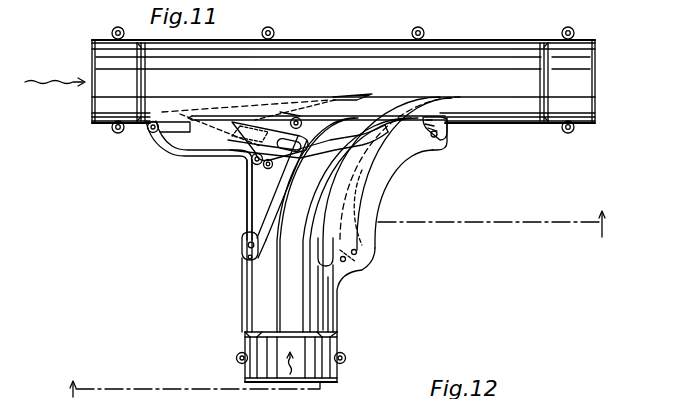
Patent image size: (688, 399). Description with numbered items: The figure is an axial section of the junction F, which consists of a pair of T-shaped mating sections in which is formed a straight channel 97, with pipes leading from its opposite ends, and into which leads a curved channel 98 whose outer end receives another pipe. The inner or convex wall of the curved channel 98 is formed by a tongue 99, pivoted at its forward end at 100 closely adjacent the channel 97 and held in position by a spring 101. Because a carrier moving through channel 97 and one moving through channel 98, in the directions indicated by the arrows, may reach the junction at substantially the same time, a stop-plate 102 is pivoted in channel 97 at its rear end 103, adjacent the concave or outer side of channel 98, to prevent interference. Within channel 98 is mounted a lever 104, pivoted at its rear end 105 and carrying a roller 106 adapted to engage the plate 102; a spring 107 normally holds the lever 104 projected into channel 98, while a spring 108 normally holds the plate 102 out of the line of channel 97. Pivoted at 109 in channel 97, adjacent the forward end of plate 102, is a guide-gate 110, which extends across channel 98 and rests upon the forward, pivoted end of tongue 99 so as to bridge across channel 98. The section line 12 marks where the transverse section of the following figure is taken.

The channel 97 is at (379, 54).
The curved channel 98 is at (264, 325).
The tongue 99 is at (360, 246).
The pivot of tongue 100 is at (445, 136).
The spring 101 is at (372, 178).
The stop-plate 102 is at (176, 154).
The pivot of stop-plate 103 is at (163, 128).
The lever 104 is at (265, 219).
The pivot of lever 105 is at (246, 251).
The roller 106 is at (293, 117).
The spring 107 is at (235, 140).
The spring 108 is at (255, 165).
The pivot of guide-gate 109 is at (302, 117).
The guide-gate 110 is at (388, 117).
The junction F is at (577, 62).
The section line 12- 12 is at (336, 305).